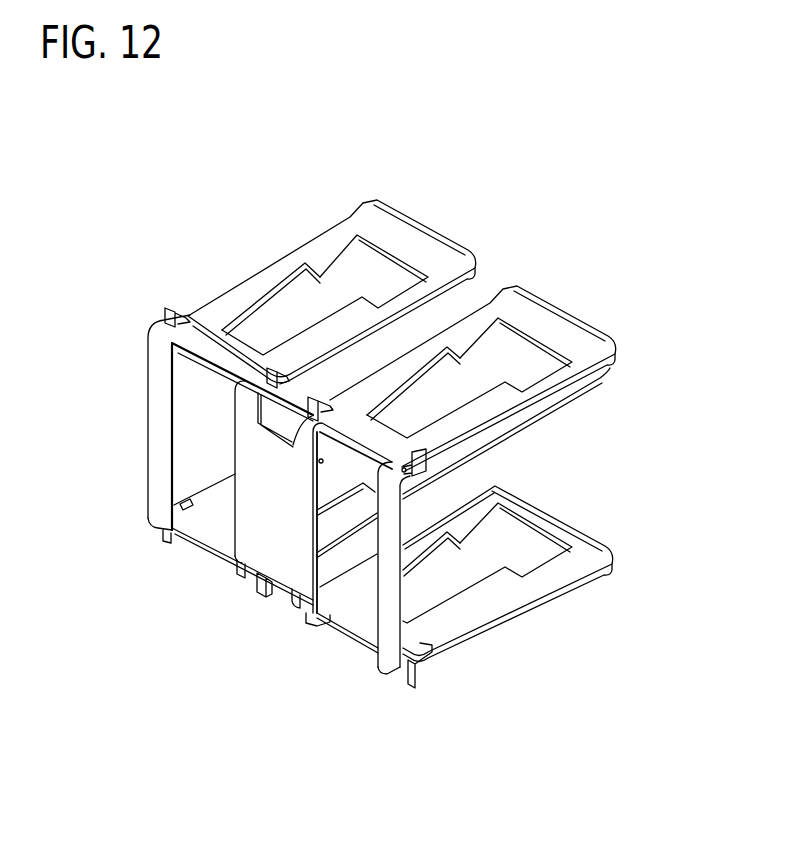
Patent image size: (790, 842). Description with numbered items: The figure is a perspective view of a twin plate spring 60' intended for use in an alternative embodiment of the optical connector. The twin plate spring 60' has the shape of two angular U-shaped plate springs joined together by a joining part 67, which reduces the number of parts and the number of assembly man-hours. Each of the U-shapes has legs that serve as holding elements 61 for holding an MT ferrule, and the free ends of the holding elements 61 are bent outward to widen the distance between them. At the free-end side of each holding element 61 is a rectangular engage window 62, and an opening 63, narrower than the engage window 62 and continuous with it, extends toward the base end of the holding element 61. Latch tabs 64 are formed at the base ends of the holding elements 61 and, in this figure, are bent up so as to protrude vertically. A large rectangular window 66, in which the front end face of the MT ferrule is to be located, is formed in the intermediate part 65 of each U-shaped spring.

The twin plate spring 60' is at (369, 454).
The holding element 61 is at (323, 243).
The engage window 62 is at (390, 253).
The opening 63 is at (282, 302).
The latch tab 64 is at (270, 363).
The intermediate part 65 is at (244, 567).
The large rectangular window 66 is at (172, 456).
The joining part 67 is at (277, 548).